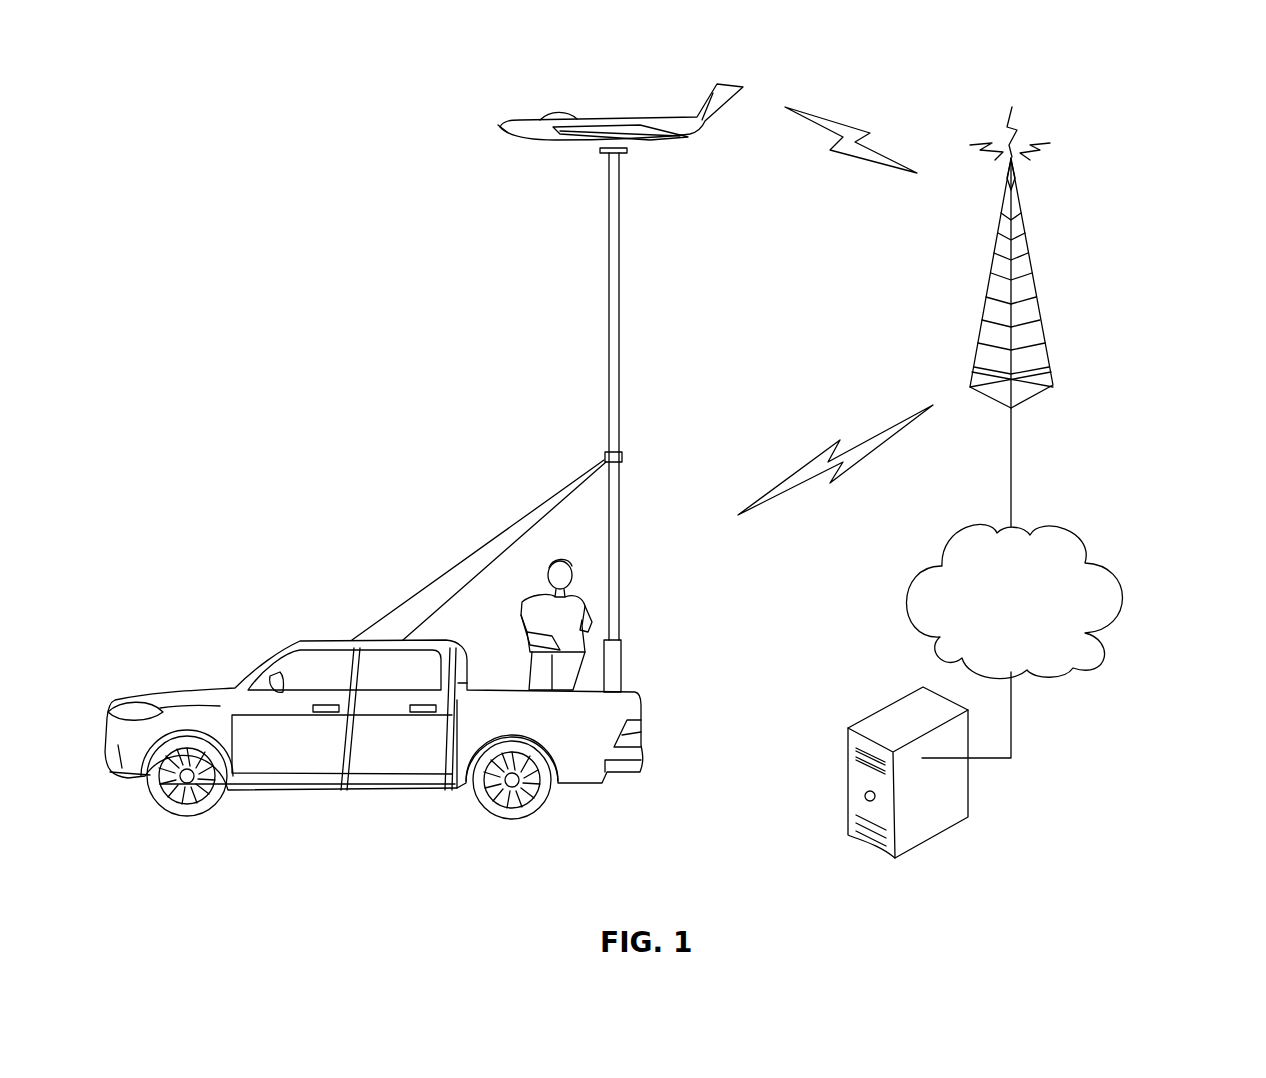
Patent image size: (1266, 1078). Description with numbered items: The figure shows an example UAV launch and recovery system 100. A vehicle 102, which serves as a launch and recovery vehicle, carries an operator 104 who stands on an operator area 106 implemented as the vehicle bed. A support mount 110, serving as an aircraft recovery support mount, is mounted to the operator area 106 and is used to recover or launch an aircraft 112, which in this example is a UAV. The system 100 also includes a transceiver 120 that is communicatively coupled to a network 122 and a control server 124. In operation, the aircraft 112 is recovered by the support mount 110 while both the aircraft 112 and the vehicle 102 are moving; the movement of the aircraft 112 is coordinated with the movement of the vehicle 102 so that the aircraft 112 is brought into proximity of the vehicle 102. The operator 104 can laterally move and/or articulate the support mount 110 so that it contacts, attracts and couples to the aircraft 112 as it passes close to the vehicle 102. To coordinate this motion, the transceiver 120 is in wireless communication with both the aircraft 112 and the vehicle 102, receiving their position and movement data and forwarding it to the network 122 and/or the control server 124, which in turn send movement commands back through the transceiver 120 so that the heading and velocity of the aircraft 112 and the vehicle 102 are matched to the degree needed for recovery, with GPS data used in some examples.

The UAV launch and recovery system 100 is at (1138, 77).
The vehicle 102 is at (138, 708).
The operator 104 is at (545, 578).
The operator area 106 is at (597, 688).
The support mount 110 is at (657, 297).
The aircraft 112 is at (605, 115).
The transceiver 120 is at (1028, 241).
The network 122 is at (1047, 527).
The control server 124 is at (933, 817).